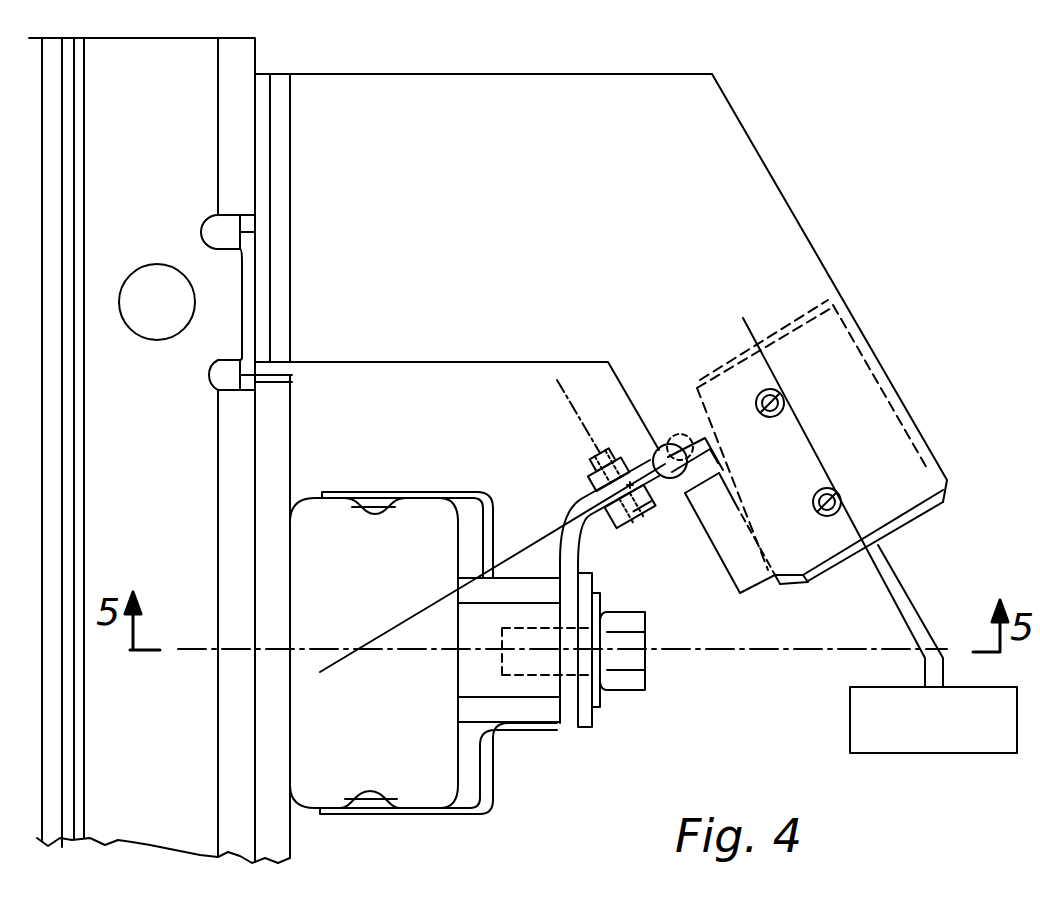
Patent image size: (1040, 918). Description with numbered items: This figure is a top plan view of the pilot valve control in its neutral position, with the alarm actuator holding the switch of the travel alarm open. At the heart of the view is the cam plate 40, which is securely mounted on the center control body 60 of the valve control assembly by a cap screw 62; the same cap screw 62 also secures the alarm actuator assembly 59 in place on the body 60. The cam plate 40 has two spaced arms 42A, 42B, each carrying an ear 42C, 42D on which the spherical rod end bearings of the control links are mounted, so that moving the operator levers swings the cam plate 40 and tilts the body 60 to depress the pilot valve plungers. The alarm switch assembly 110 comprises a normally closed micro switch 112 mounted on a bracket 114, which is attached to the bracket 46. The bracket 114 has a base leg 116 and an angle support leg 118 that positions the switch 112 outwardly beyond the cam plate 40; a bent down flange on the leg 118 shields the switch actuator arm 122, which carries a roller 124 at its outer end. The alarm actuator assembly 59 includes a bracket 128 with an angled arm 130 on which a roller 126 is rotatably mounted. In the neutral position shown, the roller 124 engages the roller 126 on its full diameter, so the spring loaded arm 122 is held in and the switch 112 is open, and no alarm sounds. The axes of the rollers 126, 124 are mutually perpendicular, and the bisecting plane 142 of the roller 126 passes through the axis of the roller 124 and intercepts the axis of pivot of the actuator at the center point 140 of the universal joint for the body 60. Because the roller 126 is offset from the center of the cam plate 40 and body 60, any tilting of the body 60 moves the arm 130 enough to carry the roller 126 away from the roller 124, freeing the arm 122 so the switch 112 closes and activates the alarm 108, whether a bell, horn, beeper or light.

The cam plate 40 is at (533, 708).
The arm of cam plate 42A is at (488, 795).
The arm of cam plate 42B is at (480, 496).
The ear 42C is at (427, 814).
The ear 42D is at (350, 496).
The bracket 46 is at (240, 62).
The alarm actuator assembly 59 is at (597, 540).
The center control body 60 is at (517, 640).
The cap screw 62 is at (630, 683).
The alarm 108 is at (880, 753).
The alarm switch assembly 110 is at (824, 574).
The switch 112 is at (897, 517).
The bracket 114 is at (753, 138).
The base leg 116 is at (493, 87).
The angle support leg 118 is at (812, 250).
The switch actuator arm 122 is at (715, 448).
The roller 124 is at (660, 448).
The roller 126 is at (586, 505).
The bracket 128 is at (568, 572).
The angled arm 130 is at (612, 522).
The center point 140 is at (373, 652).
The plane 142 is at (436, 603).